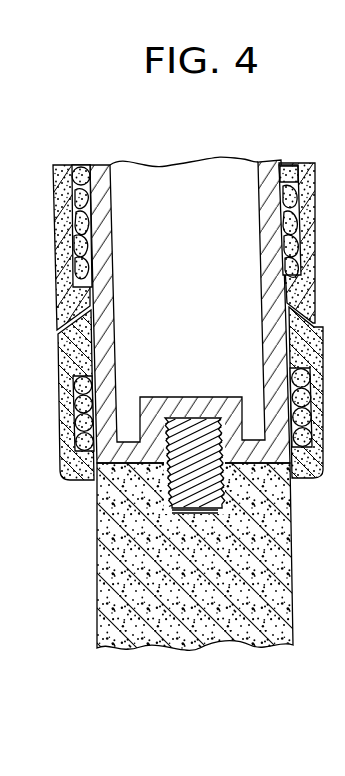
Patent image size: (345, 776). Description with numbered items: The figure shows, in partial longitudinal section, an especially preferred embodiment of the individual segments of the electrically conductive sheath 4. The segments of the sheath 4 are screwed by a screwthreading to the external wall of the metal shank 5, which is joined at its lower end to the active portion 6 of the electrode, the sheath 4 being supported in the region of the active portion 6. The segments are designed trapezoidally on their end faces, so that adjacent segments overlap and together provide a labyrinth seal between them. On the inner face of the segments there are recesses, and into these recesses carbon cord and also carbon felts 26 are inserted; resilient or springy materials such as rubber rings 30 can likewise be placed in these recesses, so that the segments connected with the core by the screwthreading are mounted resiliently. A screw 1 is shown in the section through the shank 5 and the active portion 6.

The screw 1 is at (193, 418).
The electrically conductive sheath 4 is at (57, 275).
The metal shank 5 is at (265, 166).
The active portion 6 is at (230, 636).
The carbon felts 26 is at (80, 227).
The rubber rings 30 is at (79, 165).